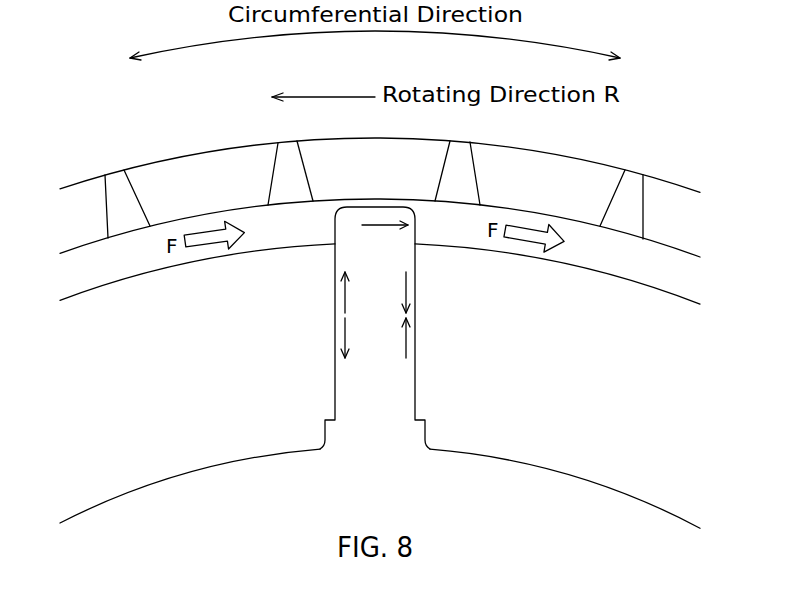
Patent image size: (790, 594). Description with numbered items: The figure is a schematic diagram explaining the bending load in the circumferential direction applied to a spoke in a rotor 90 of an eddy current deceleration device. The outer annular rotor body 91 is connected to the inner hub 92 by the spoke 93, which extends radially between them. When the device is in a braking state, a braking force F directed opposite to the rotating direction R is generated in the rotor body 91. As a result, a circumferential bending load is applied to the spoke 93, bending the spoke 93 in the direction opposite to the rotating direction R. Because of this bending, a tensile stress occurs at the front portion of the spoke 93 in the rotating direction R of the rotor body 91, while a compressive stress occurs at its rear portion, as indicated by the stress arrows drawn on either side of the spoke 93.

The rotor 90 is at (105, 164).
The rotor body 91 is at (537, 213).
The hub 92 is at (565, 473).
The spoke 93 is at (415, 383).